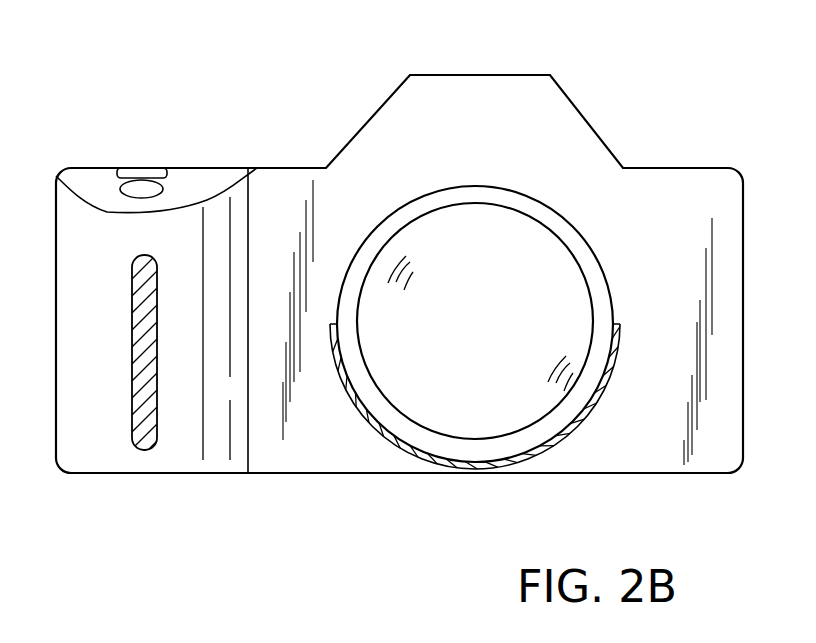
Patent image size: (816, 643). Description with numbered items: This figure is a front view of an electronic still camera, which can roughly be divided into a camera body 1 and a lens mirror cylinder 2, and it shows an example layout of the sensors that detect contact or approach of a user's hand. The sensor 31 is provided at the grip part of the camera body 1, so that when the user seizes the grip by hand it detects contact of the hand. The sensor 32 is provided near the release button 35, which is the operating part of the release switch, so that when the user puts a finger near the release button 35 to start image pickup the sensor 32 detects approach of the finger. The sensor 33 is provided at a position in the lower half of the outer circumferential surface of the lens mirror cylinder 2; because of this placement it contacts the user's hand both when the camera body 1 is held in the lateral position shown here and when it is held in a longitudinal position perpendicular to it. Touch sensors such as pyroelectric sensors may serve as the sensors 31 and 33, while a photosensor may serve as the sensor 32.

The camera body 1 is at (655, 168).
The lens mirror cylinder 2 is at (593, 252).
The sensor 31 is at (140, 450).
The sensor 32 is at (133, 178).
The sensor 33 is at (433, 460).
The release button 35 is at (128, 192).